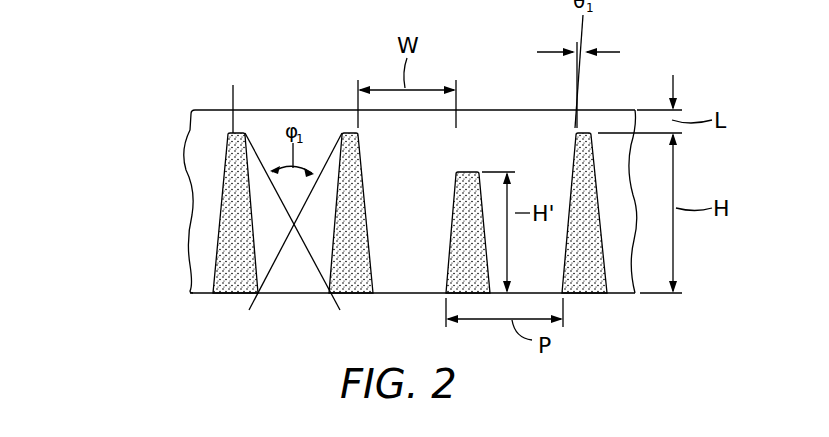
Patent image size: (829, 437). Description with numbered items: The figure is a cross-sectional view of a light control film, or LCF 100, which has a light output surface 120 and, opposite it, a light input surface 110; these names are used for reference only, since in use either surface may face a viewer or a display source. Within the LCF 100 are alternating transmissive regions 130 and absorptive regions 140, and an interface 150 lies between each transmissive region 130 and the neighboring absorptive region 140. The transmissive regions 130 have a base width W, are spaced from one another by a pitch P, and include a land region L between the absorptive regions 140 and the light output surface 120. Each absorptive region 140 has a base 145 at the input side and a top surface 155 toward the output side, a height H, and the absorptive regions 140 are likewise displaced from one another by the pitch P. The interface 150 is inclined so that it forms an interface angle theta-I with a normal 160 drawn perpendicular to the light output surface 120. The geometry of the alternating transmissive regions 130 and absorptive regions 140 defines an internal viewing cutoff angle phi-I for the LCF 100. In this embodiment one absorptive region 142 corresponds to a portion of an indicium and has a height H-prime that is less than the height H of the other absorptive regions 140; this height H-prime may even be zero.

The light control film (LCF) 100 is at (145, 53).
The light input surface 110 is at (295, 295).
The light output surface 120 is at (317, 110).
The transmissive region 130 is at (267, 242).
The absorptive region 140 is at (225, 192).
The absorptive region (indicium portion) 142 is at (455, 258).
The base 145 is at (228, 296).
The interface 150 is at (583, 78).
The top surface 155 is at (225, 98).
The normal 160 is at (577, 80).